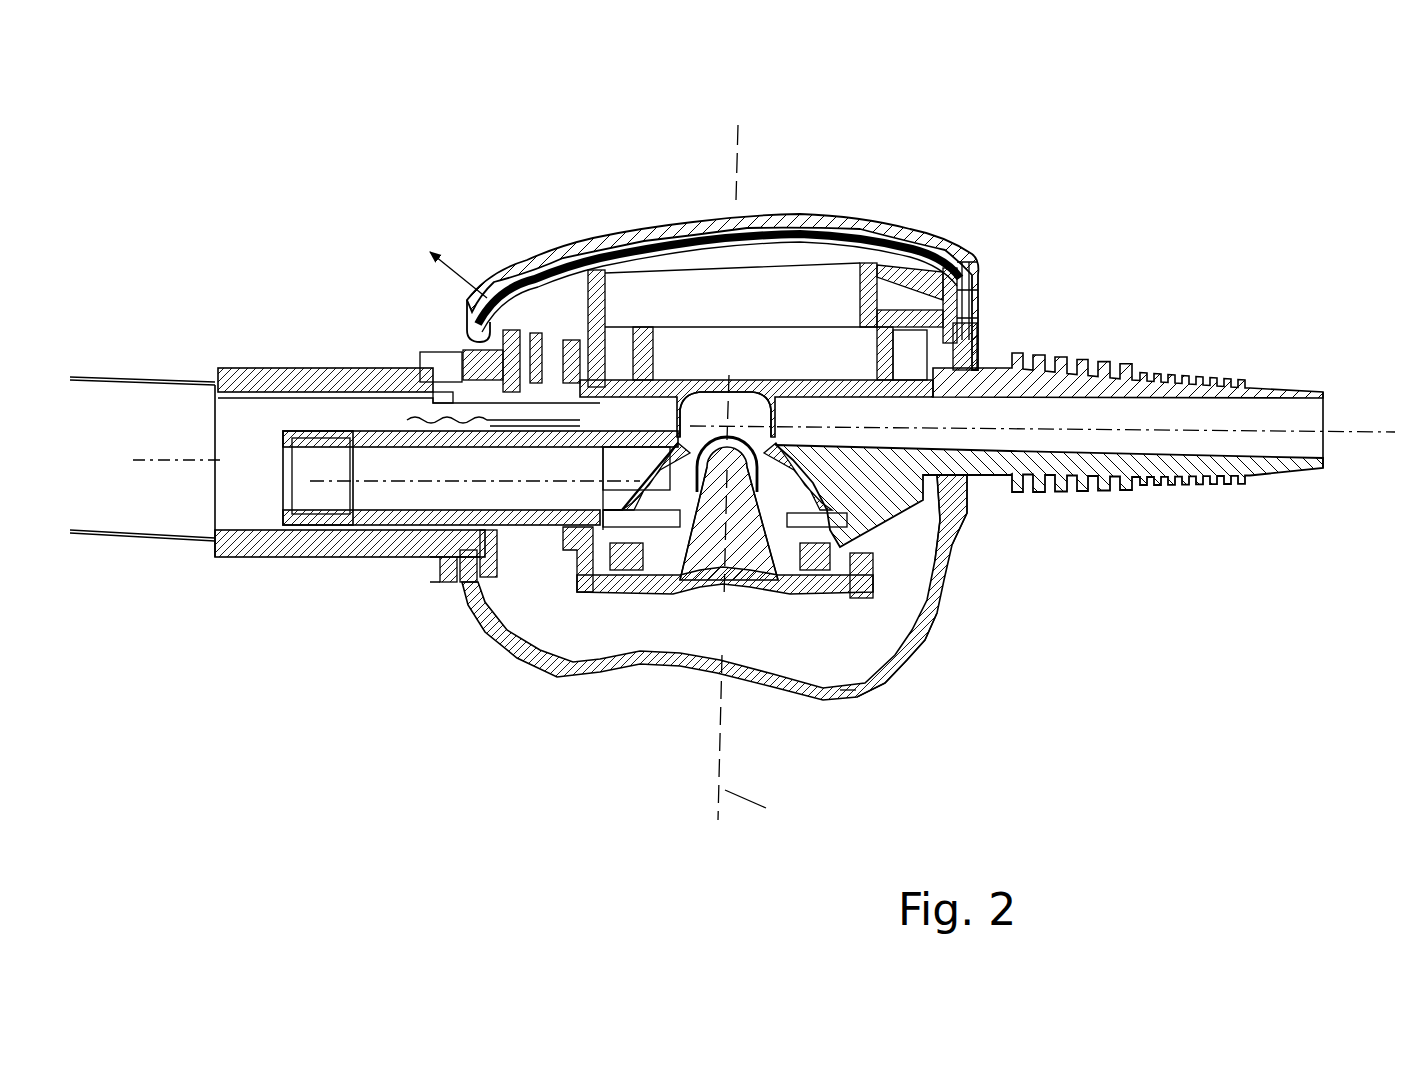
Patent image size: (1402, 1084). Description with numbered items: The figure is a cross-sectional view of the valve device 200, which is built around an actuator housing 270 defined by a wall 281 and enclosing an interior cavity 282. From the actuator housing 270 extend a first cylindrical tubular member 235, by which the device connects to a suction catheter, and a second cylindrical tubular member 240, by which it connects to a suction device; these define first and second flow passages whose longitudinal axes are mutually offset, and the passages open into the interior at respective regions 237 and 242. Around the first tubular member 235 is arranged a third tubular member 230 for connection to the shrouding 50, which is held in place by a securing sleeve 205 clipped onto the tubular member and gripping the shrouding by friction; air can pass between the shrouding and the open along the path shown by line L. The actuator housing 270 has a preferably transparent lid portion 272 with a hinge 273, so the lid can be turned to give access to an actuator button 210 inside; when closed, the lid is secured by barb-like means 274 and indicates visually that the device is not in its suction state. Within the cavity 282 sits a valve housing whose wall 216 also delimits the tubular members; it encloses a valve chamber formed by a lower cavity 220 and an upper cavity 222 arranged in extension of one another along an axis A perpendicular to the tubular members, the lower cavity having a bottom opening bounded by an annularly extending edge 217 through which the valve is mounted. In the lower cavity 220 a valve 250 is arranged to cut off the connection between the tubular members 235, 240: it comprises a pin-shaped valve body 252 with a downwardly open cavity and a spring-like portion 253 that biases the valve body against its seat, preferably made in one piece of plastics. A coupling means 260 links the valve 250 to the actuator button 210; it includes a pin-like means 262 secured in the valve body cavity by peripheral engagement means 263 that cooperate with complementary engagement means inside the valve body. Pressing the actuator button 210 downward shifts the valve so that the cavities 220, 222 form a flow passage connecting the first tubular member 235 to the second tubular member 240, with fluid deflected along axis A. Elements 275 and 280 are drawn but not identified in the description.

The valve device 200 is at (975, 160).
The shrouding 50 is at (102, 377).
The securing sleeve 205 is at (292, 554).
The third tubular member 230 is at (333, 369).
The first cylindrical tubular member 235 is at (310, 433).
The hinge 273 is at (470, 330).
The wall of the valve housing 216 is at (490, 574).
The region 237 is at (567, 500).
The annularly extending edge 217 is at (602, 530).
The lower or first cavity 220 is at (640, 465).
The actuator button 210 is at (622, 425).
The upper or second cavity 222 is at (722, 405).
The valve body 252 is at (775, 430).
The lid portion 272 is at (902, 230).
The region 242 is at (855, 340).
The barb-like means 274 is at (973, 280).
The end block 275 is at (977, 340).
The second cylindrical tubular member 240 is at (1200, 380).
The valve 250 is at (915, 517).
The cup side wall 280 is at (940, 560).
The coupling means 260 is at (862, 578).
The actuator housing 270 is at (917, 657).
The wall 281 is at (618, 672).
The interior cavity 282 is at (848, 655).
The spring-like portion 253 is at (792, 535).
The pin-like means 262 is at (708, 512).
The engagement means 263 is at (735, 520).